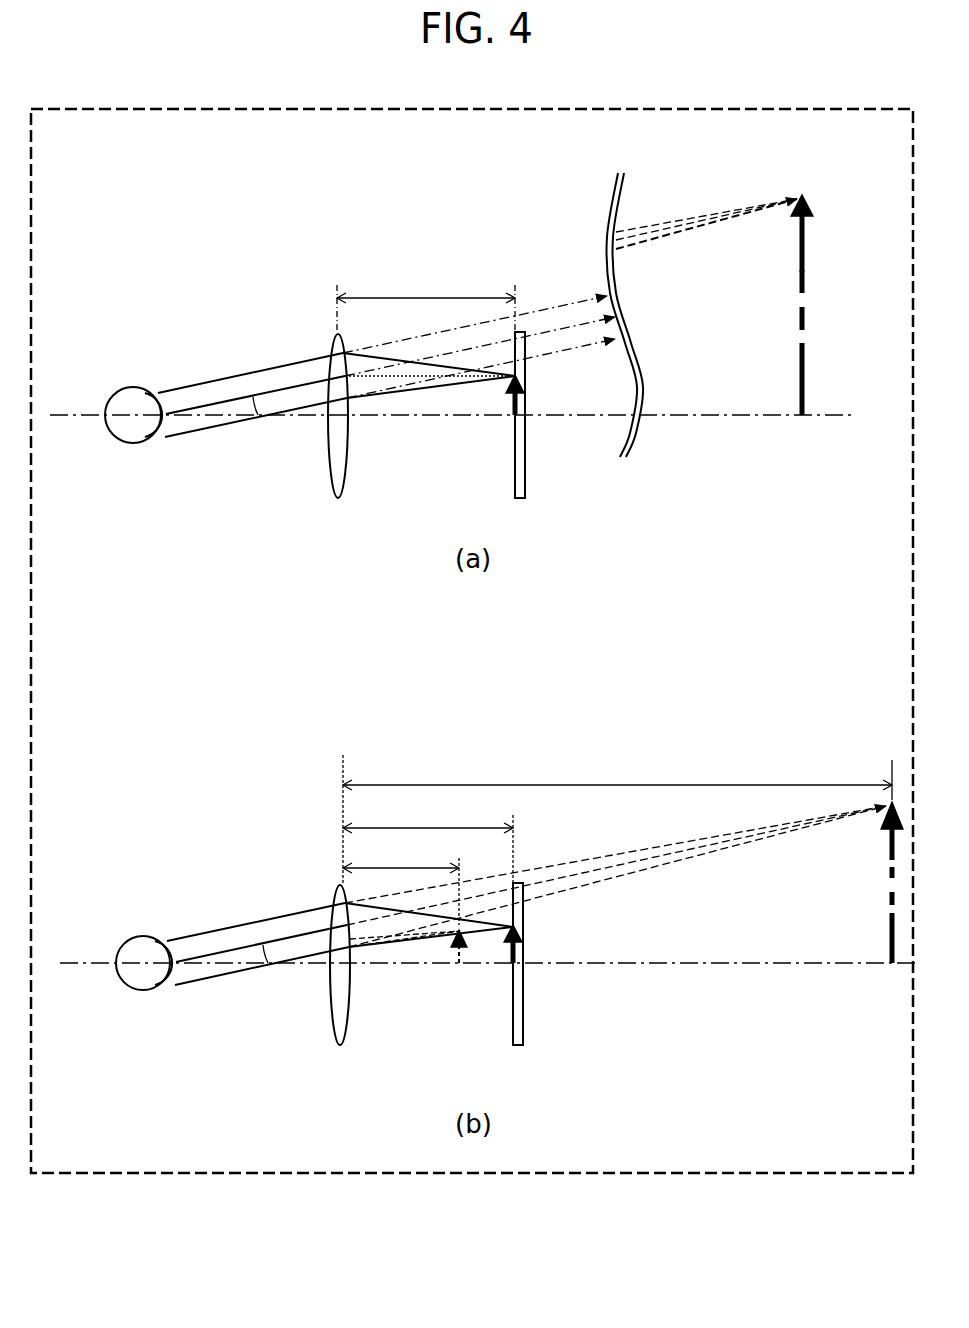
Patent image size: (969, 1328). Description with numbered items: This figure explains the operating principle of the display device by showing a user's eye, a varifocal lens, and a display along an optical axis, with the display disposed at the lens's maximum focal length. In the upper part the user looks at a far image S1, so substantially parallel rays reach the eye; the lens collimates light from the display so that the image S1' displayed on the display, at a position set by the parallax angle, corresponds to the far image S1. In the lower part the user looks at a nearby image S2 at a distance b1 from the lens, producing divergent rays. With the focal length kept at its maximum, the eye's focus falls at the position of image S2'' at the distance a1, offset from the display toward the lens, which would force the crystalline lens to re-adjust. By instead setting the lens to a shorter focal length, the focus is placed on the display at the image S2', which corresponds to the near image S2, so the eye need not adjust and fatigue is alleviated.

The position where image is formed a1 is at (401, 880).
The distance from varifocal lens to image b1 is at (617, 775).
The image disposed far away S1 is at (764, 327).
The image displayed on display S1' is at (474, 420).
The image disposed nearby S2 is at (854, 905).
The image displayed on display S2' is at (565, 942).
The image position offset from display S2'' is at (418, 965).